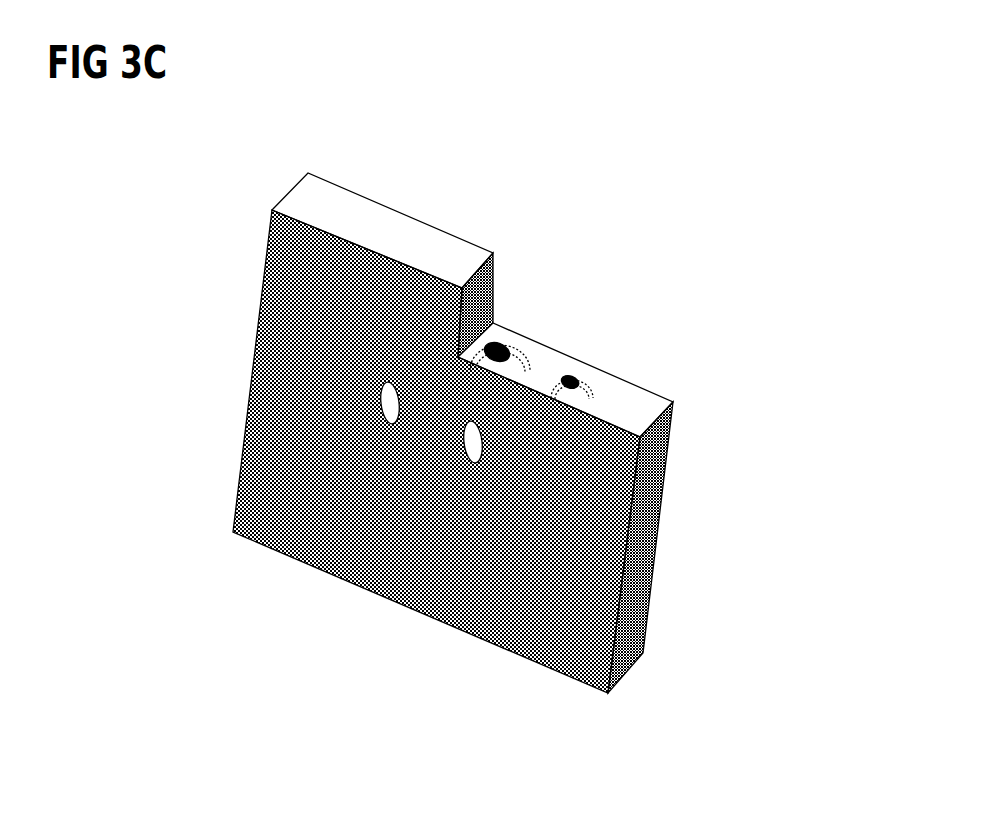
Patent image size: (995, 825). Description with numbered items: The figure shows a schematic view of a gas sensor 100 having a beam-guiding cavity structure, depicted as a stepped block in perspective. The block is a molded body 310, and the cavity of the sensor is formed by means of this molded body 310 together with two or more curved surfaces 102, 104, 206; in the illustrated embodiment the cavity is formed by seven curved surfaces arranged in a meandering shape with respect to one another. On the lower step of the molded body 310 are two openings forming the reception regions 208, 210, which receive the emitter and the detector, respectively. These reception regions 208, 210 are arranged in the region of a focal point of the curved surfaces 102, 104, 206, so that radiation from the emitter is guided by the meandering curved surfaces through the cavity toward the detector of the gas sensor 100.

The gas sensor 100 is at (542, 406).
The molded body 310 is at (542, 430).
The reception region 208 is at (507, 342).
The reception region 210 is at (582, 382).
The curved surface 102 is at (542, 451).
The curved surface 104 is at (542, 451).
The curved surface 206 is at (570, 512).